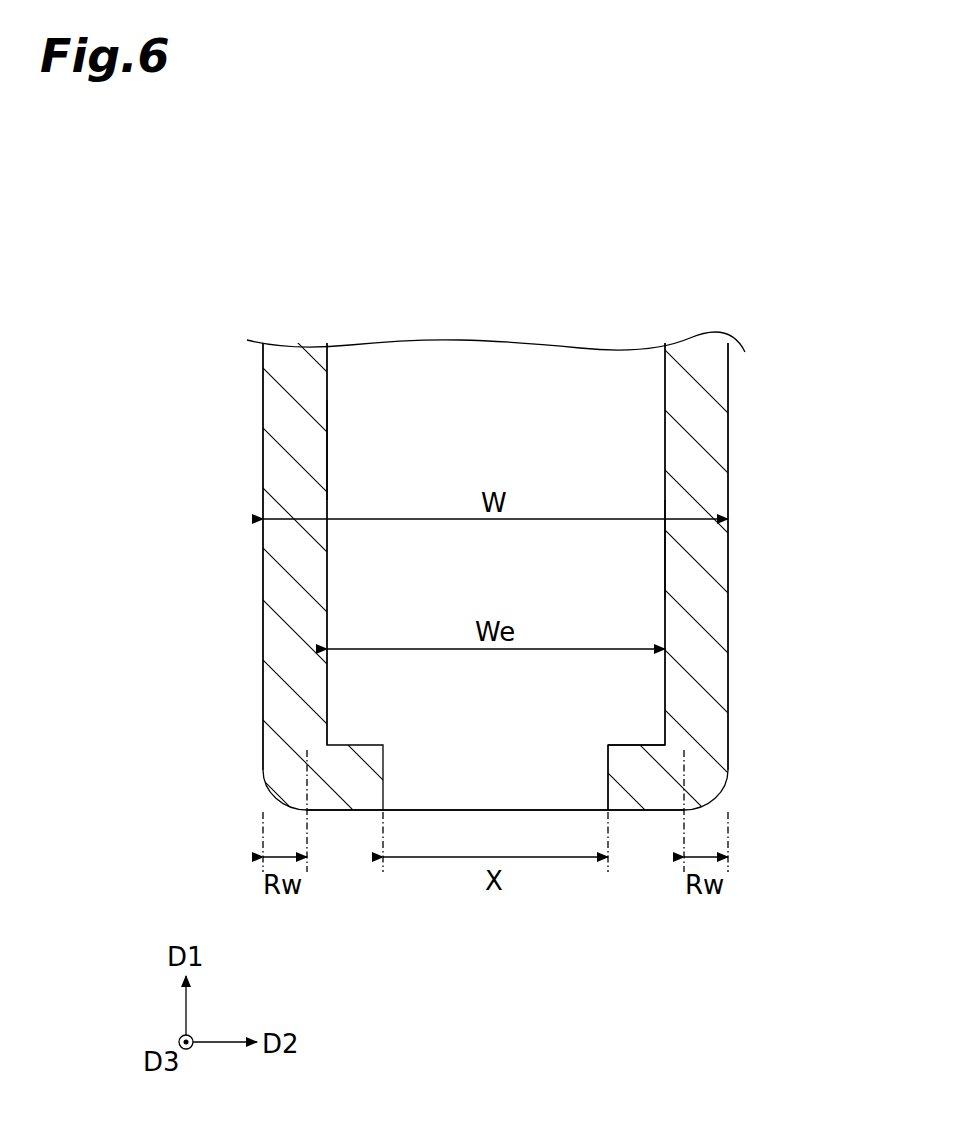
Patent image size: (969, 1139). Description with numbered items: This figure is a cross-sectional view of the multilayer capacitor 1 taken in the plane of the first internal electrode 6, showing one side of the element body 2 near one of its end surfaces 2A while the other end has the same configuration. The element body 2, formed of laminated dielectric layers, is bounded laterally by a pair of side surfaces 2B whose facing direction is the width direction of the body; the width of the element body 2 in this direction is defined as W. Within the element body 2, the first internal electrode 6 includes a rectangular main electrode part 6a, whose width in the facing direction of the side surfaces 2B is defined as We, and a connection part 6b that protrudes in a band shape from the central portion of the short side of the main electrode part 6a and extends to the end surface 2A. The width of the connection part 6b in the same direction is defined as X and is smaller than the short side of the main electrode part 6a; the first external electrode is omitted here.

The multilayer capacitor 1 is at (212, 321).
The element body 2 is at (763, 437).
The end surface 2A is at (343, 813).
The side surface 2B is at (262, 620).
The first internal electrode 6 is at (325, 447).
The main electrode part 6a is at (610, 563).
The connection part 6b is at (578, 777).